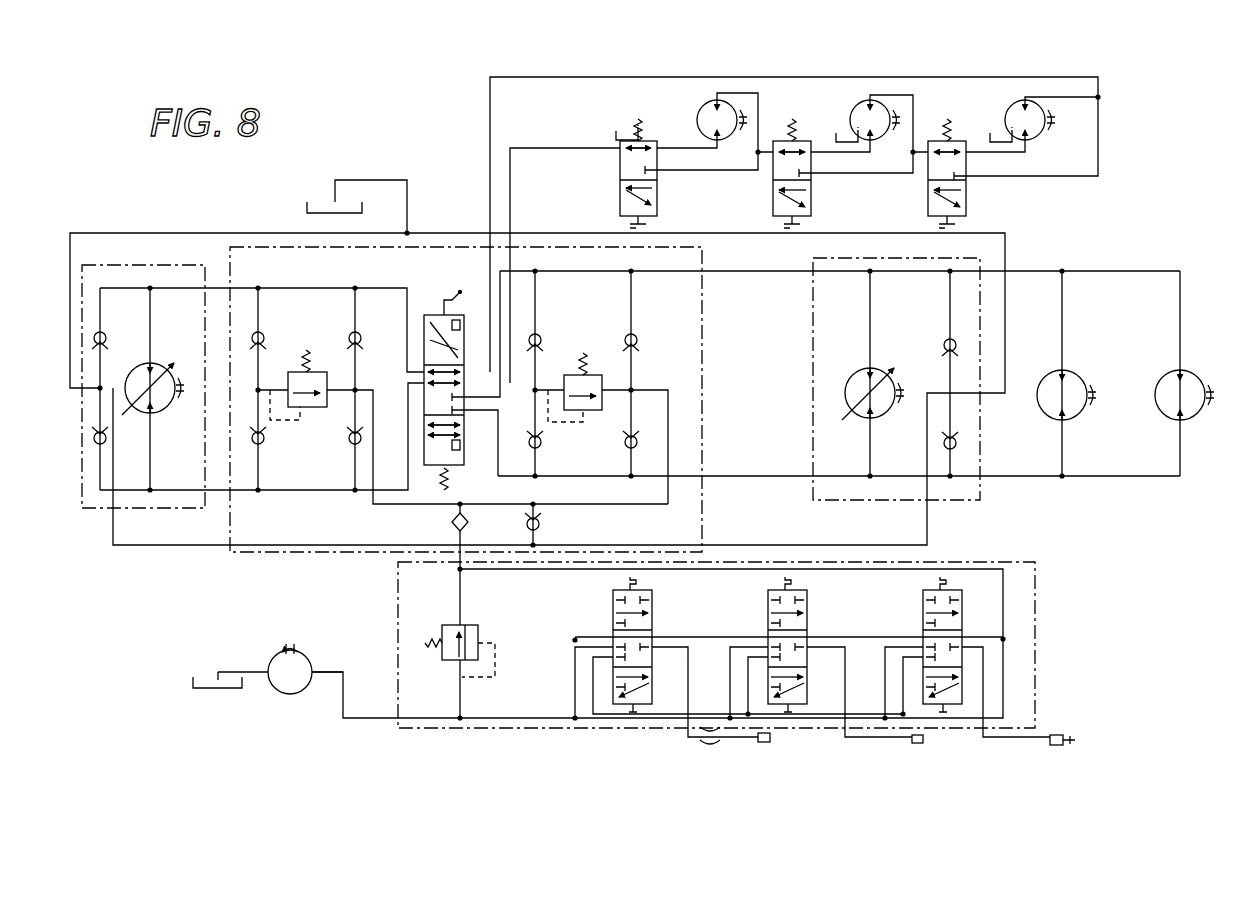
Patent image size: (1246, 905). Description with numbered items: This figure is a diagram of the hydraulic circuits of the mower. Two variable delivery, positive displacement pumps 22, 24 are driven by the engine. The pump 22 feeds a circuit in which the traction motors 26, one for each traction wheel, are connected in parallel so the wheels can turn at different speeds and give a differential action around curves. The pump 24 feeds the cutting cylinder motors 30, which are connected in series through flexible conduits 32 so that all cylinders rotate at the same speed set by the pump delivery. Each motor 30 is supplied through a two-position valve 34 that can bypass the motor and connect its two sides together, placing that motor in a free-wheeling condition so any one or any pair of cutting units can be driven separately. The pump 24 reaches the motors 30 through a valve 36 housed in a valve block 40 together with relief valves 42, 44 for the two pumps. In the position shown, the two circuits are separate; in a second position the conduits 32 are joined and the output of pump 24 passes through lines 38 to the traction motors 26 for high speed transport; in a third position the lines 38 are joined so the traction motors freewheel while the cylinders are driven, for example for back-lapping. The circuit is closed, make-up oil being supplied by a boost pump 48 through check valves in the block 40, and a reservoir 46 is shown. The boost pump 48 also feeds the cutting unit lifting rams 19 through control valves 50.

The cutting unit lifting ram 19 is at (770, 740).
The hydraulic pump 22 is at (812, 380).
The hydraulic pump 24 is at (93, 510).
The hydraulic motor 26 is at (1082, 413).
The hydraulic motor 30 is at (700, 108).
The flexible conduit 32 is at (493, 123).
The two-position valve 34 is at (657, 197).
The valve 36 is at (462, 440).
The line 38 is at (748, 277).
The valve block 40 is at (704, 430).
The relief valve 42 is at (605, 411).
The relief valve 44 is at (320, 408).
The reservoir 46 is at (321, 210).
The boost pump 48 is at (284, 690).
The control valve 50 is at (652, 613).